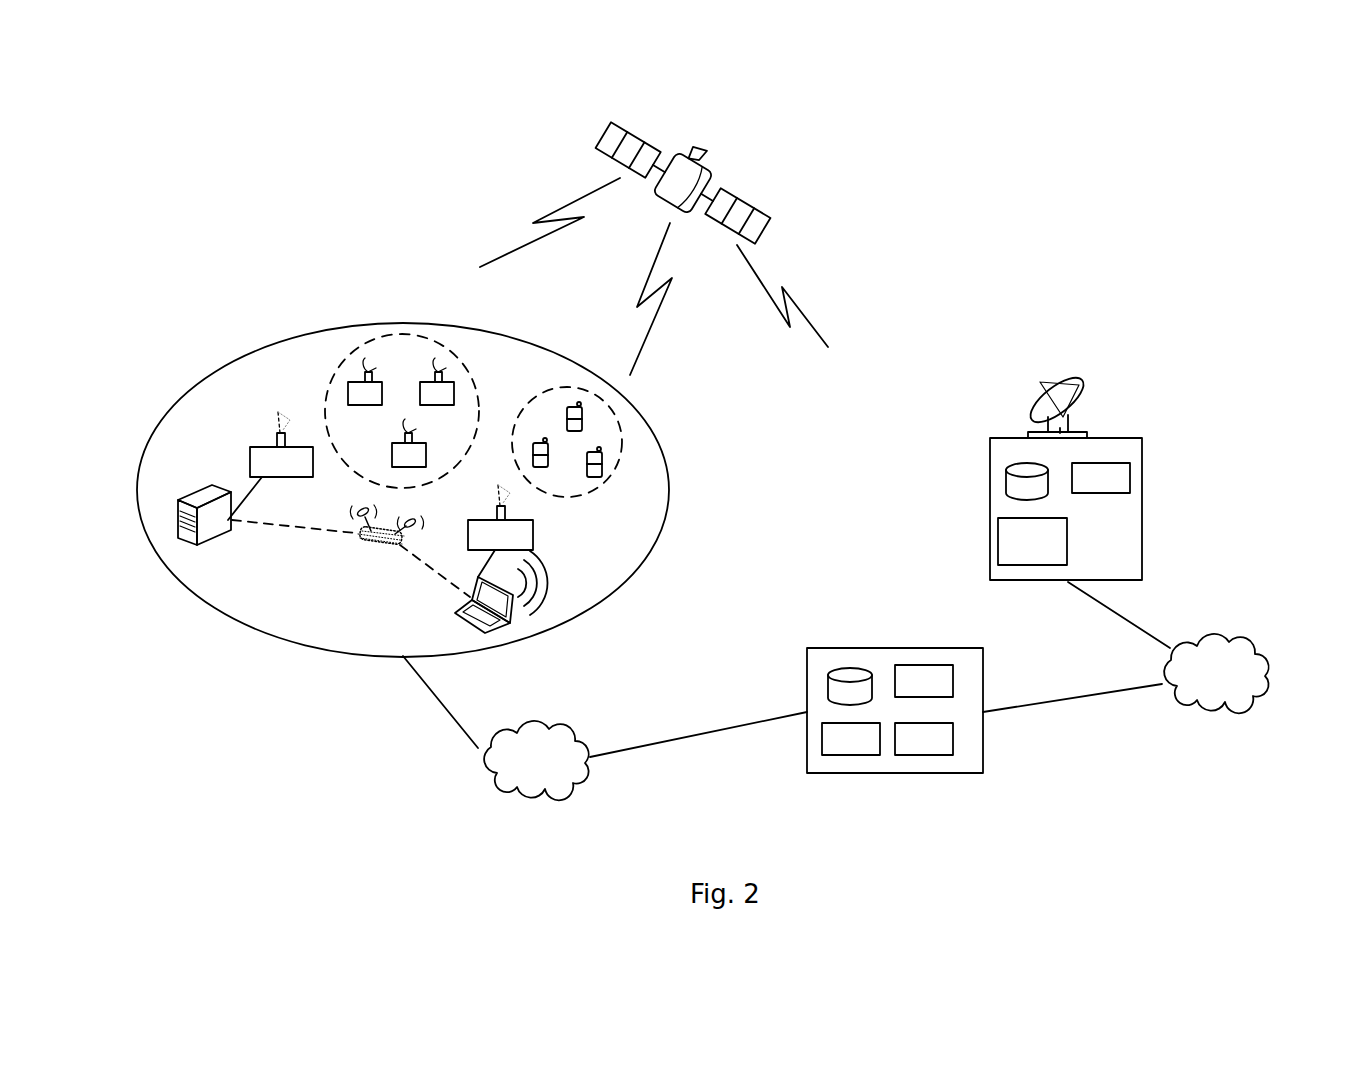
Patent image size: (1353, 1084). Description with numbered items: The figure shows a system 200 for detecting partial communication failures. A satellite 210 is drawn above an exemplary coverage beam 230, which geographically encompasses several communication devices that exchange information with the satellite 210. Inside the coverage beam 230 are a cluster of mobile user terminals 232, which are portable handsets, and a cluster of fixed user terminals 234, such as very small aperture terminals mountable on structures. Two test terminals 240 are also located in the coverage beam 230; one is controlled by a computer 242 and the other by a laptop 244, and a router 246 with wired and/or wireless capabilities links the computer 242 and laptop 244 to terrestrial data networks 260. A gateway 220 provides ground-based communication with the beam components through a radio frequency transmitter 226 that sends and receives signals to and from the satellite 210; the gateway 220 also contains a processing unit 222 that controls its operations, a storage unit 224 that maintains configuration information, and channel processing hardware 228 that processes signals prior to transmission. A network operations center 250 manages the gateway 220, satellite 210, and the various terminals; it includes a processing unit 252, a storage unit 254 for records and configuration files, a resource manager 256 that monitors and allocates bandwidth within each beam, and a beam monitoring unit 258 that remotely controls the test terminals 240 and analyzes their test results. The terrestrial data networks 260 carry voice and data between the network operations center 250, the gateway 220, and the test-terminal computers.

The system 200 is at (1032, 122).
The satellite 210 is at (757, 208).
The gateway 220 is at (1072, 458).
The processing unit 222 is at (1113, 493).
The storage unit 224 is at (1007, 480).
The radio frequency transmitter 226 is at (1087, 382).
The channel processing hardware 228 is at (998, 540).
The coverage beam 230 is at (370, 322).
The mobile user terminals 232 is at (652, 441).
The fixed user terminals 234 is at (334, 367).
The test terminals 240 is at (278, 477).
The computer 242 is at (210, 487).
The laptop 244 is at (460, 611).
The router 246 is at (370, 548).
The network operations center 250 is at (890, 711).
The processing unit 252 is at (953, 675).
The storage unit 254 is at (828, 683).
The resource manager 256 is at (822, 747).
The beam monitoring unit 258 is at (922, 755).
The terrestrial data networks 260 is at (567, 723).